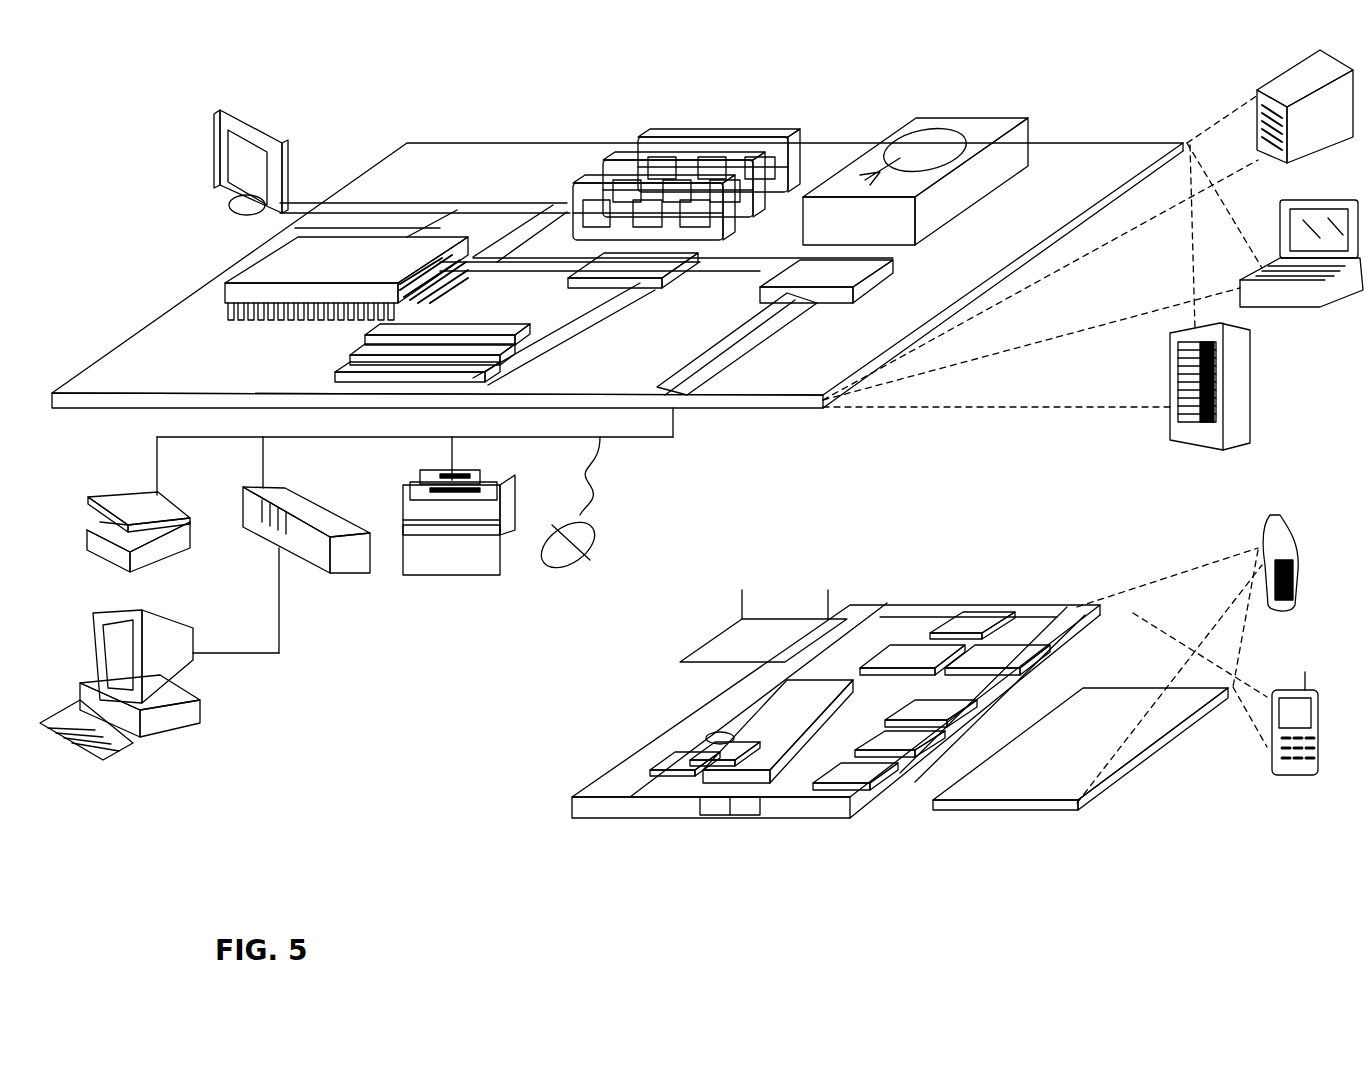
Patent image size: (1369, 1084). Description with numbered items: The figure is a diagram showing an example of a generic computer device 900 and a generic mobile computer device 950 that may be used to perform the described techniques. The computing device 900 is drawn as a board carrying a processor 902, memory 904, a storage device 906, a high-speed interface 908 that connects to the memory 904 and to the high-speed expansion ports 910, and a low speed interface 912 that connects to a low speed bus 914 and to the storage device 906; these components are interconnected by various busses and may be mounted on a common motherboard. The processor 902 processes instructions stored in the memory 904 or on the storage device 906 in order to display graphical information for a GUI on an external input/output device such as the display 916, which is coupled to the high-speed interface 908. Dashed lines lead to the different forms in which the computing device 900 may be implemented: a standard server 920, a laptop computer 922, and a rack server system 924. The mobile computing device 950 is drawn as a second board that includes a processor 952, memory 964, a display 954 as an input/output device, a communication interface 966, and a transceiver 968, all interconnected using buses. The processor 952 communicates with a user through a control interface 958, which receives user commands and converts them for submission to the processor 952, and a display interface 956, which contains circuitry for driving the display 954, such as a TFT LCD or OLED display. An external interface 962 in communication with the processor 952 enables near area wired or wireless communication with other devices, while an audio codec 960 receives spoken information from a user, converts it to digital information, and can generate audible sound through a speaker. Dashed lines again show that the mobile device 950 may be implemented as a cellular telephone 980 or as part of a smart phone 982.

The generic computer device 900 is at (350, 82).
The processor 902 is at (130, 281).
The memory 904 is at (718, 136).
The storage device 906 is at (960, 118).
The high-speed interface 908 is at (740, 420).
The high-speed expansion ports 910 is at (228, 365).
The low speed interface 912 is at (883, 440).
The low speed bus 914 is at (690, 478).
The display 916 is at (225, 108).
The standard server 920 is at (1278, 88).
The laptop computer 922 is at (1330, 198).
The rack server system 924 is at (1253, 393).
The generic mobile computer device 950 is at (520, 828).
The processor 952 is at (635, 668).
The display 954 is at (1145, 572).
The display interface 956 is at (838, 858).
The control interface 958 is at (950, 840).
The audio codec 960 is at (938, 712).
The external interface 962 is at (638, 858).
The memory 964 is at (570, 722).
The communication interface 966 is at (905, 625).
The transceiver 968 is at (1068, 540).
The cellular telephone 980 is at (1270, 515).
The smart phone 982 is at (1292, 685).